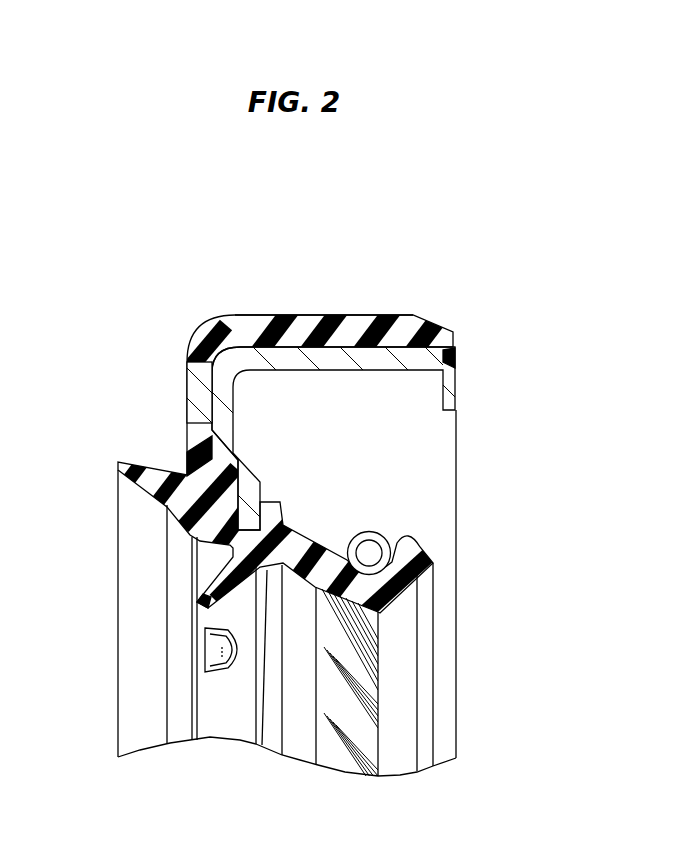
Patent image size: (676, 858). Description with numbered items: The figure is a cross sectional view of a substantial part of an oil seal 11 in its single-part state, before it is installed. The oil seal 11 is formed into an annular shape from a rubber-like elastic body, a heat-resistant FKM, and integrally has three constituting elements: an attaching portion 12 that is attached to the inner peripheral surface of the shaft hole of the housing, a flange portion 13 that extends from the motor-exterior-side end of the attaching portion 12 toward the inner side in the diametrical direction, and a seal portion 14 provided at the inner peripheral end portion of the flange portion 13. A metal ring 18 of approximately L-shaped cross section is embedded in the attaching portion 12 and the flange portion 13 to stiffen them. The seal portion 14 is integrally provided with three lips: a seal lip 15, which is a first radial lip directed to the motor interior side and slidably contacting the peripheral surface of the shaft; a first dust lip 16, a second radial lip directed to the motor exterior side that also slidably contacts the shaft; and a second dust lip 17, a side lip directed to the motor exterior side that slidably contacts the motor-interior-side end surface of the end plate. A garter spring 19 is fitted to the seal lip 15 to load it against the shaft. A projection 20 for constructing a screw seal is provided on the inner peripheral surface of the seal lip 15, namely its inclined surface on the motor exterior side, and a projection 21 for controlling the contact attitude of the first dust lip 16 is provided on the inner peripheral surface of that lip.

The oil seal 11 is at (455, 446).
The attaching portion 12 is at (347, 335).
The flange portion 13 is at (185, 403).
The seal portion 14 is at (278, 565).
The seal lip 15 is at (368, 588).
The first dust lip 16 is at (197, 602).
The second dust lip 17 is at (147, 482).
The metal ring 18 is at (300, 332).
The garter spring 19 is at (380, 531).
The projection 20 is at (345, 765).
The projection 21 is at (220, 677).